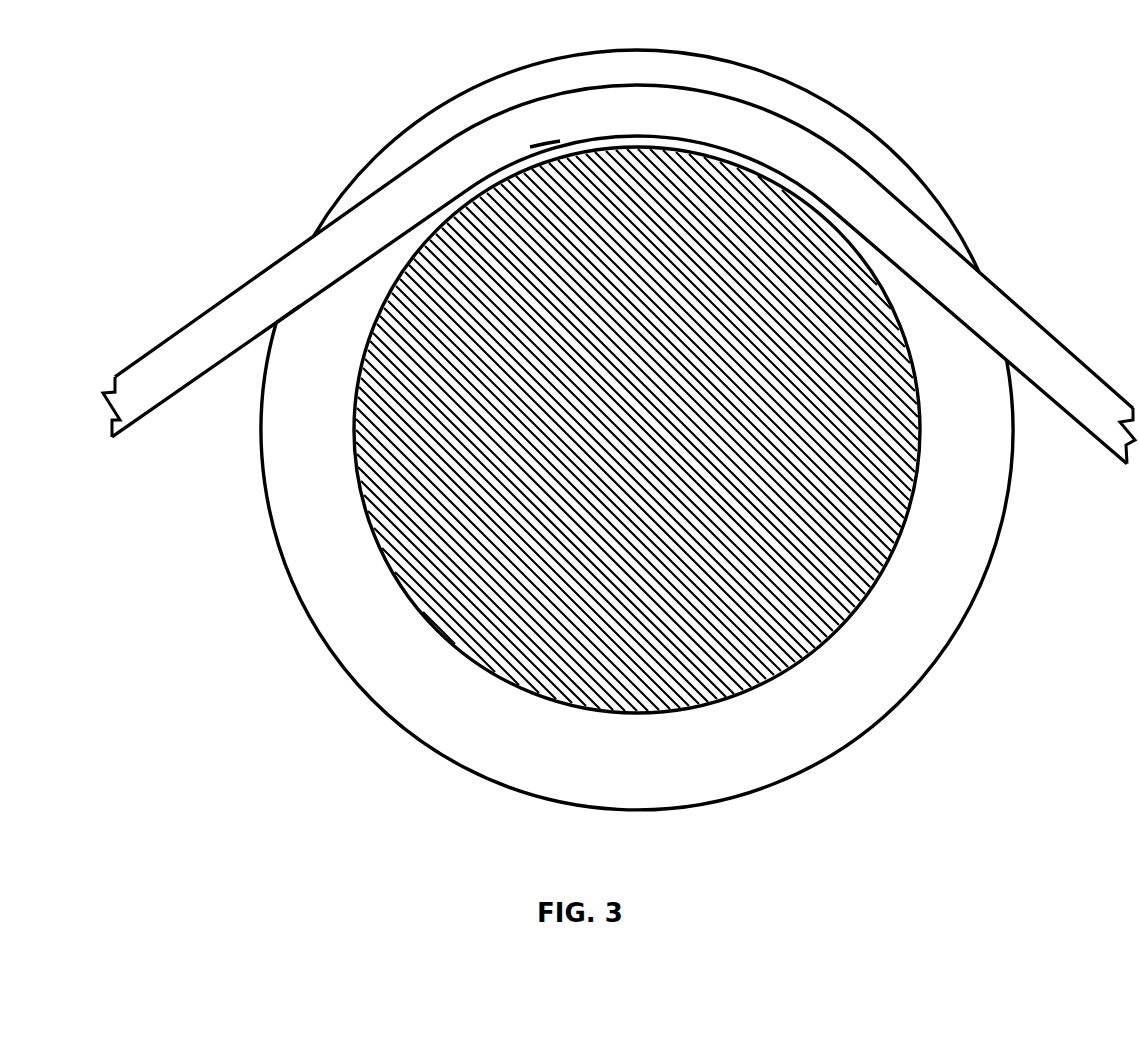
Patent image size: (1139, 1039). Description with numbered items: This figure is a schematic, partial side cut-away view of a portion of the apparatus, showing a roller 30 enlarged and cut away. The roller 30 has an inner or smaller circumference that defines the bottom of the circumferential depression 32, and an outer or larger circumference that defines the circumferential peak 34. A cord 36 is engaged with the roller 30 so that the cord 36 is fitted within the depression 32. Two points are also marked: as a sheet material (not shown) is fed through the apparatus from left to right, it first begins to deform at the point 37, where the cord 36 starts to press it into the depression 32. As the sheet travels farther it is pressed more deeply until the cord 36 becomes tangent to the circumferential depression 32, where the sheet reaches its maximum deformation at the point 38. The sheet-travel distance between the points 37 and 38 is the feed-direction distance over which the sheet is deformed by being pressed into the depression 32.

The roller 30 is at (661, 341).
The circumferential depression 32 is at (388, 555).
The circumferential peak 34 is at (345, 669).
The cord 36 is at (188, 333).
The point where deformation begins 37 is at (274, 325).
The point of maximum deformation 38 is at (545, 155).